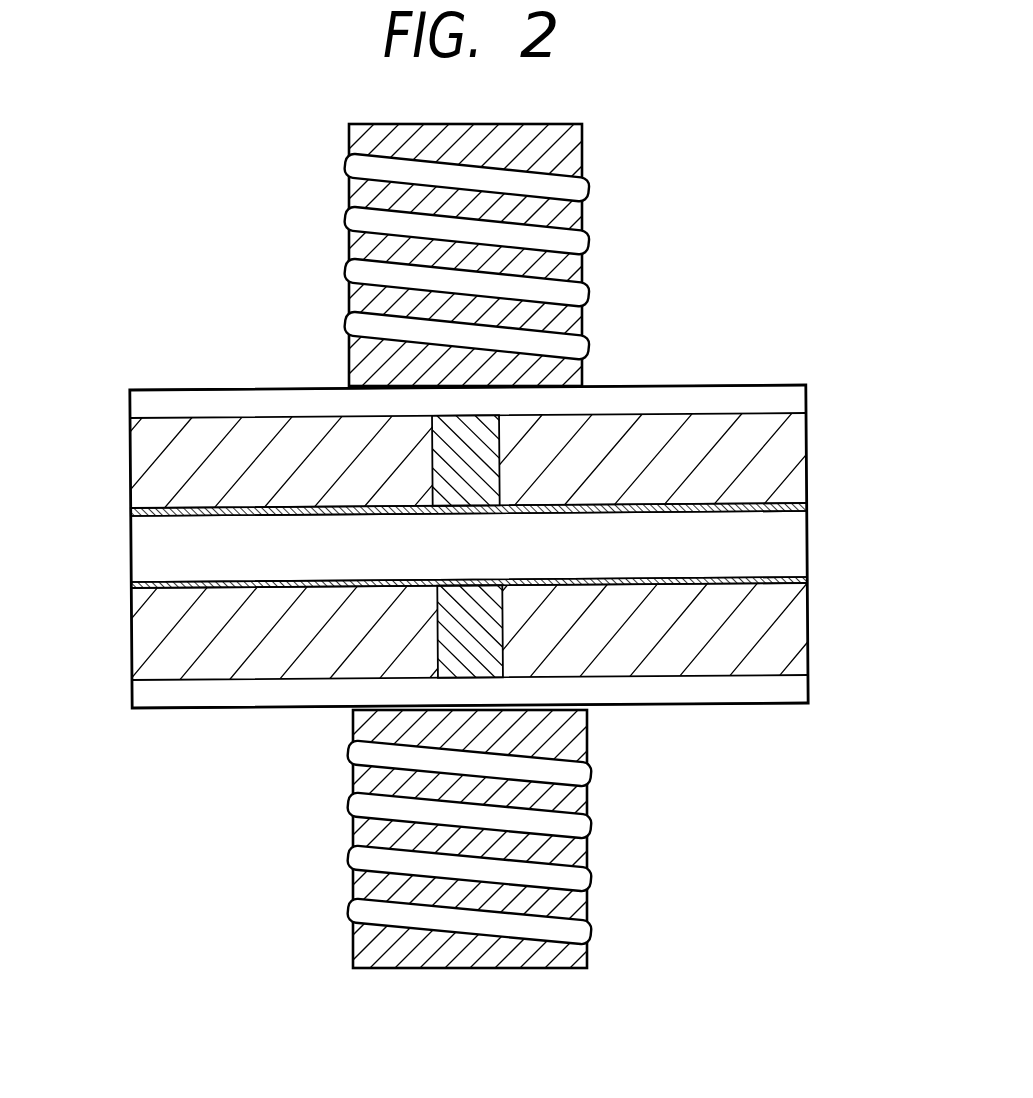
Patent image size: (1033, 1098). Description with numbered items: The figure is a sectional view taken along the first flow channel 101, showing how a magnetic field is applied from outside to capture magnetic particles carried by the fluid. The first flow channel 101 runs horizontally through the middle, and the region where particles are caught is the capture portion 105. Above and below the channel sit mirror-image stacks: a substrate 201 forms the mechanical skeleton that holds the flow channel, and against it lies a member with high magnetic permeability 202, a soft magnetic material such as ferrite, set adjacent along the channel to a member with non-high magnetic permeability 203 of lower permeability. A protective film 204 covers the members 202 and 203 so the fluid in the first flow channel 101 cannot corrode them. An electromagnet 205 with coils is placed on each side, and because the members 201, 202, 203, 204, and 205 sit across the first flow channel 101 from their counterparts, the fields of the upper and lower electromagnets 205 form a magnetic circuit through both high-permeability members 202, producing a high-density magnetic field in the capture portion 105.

The first flow channel 101 is at (782, 535).
The capture portion 105 is at (467, 542).
The substrate 201 is at (743, 397).
The member with high magnetic permeability 202 is at (483, 452).
The member with non-high magnetic permeability 203 is at (773, 448).
The protective film 204 is at (160, 582).
The electromagnet 205 is at (560, 215).